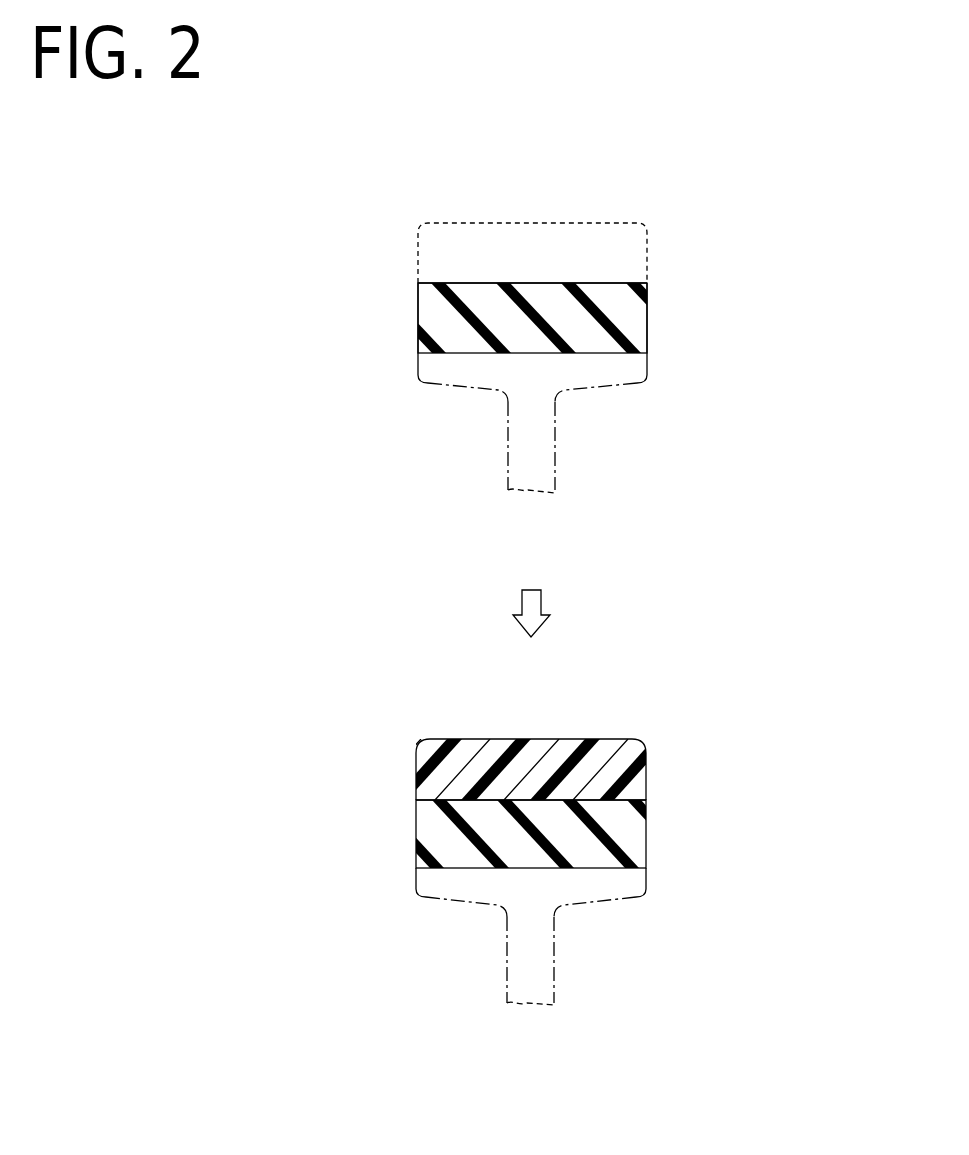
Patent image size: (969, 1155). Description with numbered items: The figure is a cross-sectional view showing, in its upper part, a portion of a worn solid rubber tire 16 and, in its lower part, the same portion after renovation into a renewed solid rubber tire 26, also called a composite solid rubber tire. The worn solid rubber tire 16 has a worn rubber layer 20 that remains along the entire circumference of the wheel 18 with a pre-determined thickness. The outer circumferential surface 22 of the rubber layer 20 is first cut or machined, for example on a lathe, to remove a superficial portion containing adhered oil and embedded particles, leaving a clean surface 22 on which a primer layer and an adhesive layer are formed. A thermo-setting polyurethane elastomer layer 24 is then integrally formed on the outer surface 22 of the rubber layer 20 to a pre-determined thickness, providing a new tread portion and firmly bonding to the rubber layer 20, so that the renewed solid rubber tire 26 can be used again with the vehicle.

The worn solid rubber tire 16 is at (692, 290).
The wheel 18 is at (492, 435).
The worn rubber layer 20 is at (452, 317).
The outer circumferential surface 22 is at (538, 283).
The thermo-setting polyurethane elastomer layer 24 is at (573, 750).
The renewed solid rubber tire 26 is at (697, 745).